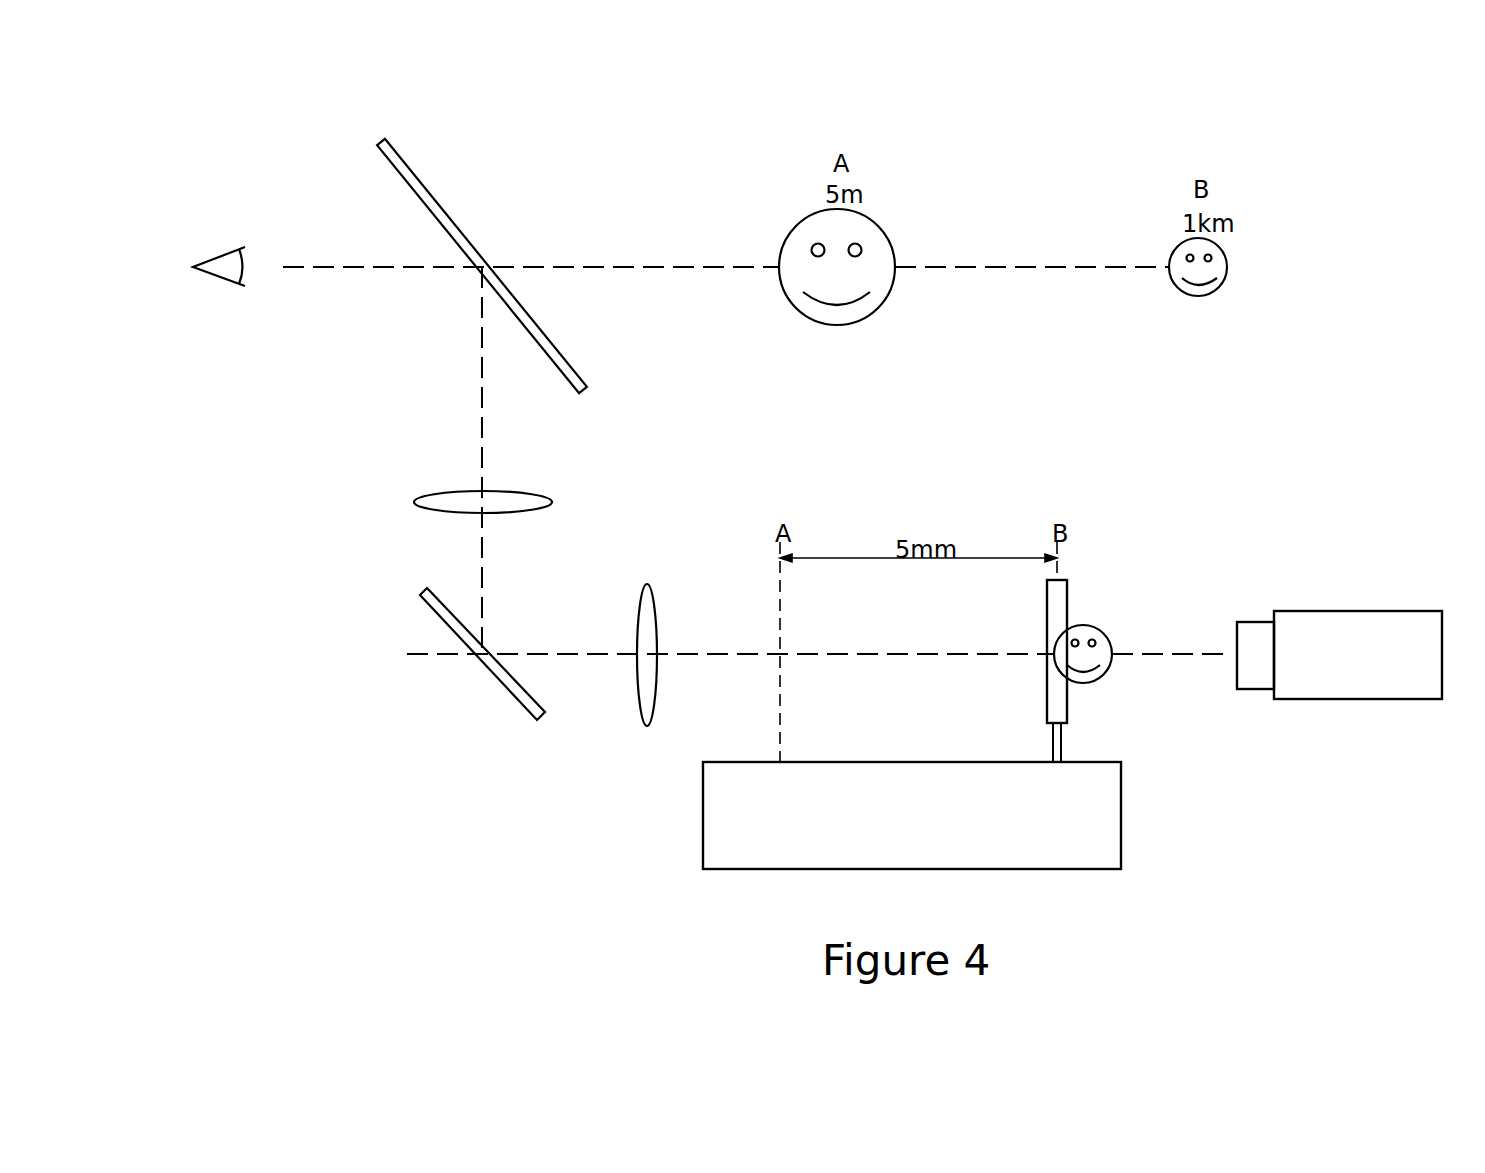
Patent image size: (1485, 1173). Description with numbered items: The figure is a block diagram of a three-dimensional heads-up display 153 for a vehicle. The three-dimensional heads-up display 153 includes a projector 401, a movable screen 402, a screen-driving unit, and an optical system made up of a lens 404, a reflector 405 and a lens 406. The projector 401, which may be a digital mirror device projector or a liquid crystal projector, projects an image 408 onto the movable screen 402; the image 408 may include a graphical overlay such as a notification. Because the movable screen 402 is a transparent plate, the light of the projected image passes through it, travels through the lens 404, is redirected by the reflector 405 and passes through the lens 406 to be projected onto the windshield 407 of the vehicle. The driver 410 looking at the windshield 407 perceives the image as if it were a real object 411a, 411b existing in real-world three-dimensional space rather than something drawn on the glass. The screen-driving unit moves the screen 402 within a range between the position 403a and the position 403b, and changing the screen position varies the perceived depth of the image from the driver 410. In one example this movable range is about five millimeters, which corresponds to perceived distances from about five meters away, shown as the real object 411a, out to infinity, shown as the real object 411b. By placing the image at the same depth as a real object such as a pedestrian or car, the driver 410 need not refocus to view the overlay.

The 3D-HUD 153 is at (182, 123).
The projector 401 is at (1392, 700).
The movable screen 402 is at (1068, 590).
The position 403a is at (780, 740).
The position 403b is at (1062, 728).
The lens 404 is at (647, 583).
The reflector 405 is at (518, 702).
The lens 406 is at (415, 500).
The windshield 407 is at (453, 220).
The image 408 is at (1113, 642).
The driver 410 is at (223, 285).
The real object 411a is at (888, 242).
The real object 411b is at (1228, 258).